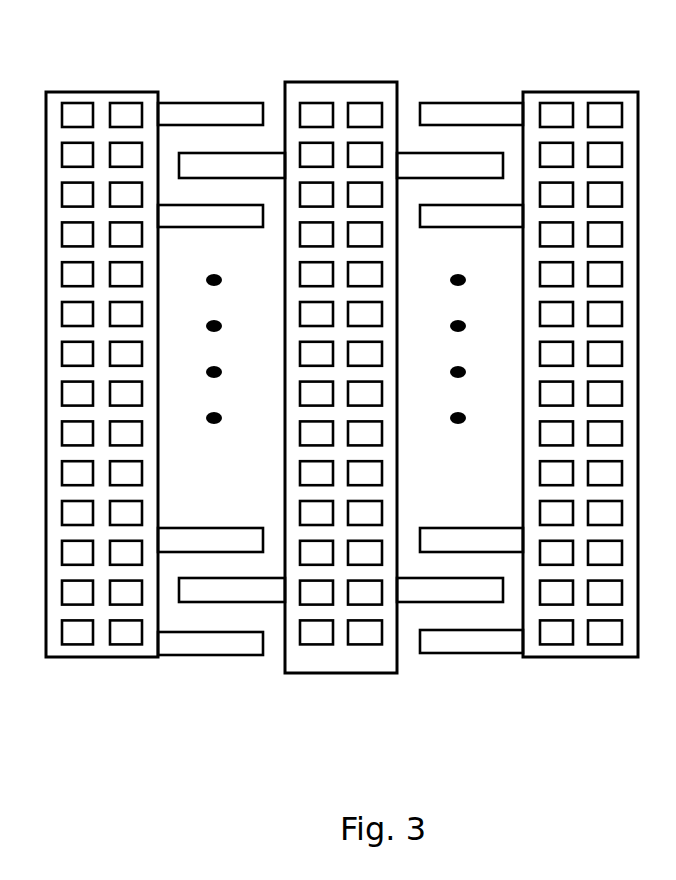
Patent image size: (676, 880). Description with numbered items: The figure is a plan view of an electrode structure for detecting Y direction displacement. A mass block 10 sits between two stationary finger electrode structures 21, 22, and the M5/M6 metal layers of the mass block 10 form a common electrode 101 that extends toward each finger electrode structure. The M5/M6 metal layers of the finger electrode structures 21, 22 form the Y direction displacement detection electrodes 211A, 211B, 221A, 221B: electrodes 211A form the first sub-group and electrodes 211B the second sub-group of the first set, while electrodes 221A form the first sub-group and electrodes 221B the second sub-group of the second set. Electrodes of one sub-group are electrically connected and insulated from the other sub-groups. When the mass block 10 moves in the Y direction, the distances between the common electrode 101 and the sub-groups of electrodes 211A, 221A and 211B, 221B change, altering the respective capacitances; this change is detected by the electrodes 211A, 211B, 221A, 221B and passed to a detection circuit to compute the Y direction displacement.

The mass block 10 is at (341, 355).
The finger electrode structure 21 is at (580, 347).
The finger electrode structure 22 is at (102, 355).
The common electrode 101 is at (341, 378).
The Y direction displacement detection electrode 211A is at (455, 112).
The Y direction displacement detection electrode 211B is at (477, 215).
The Y direction displacement detection electrode 221A is at (227, 103).
The Y direction displacement detection electrode 221B is at (208, 212).